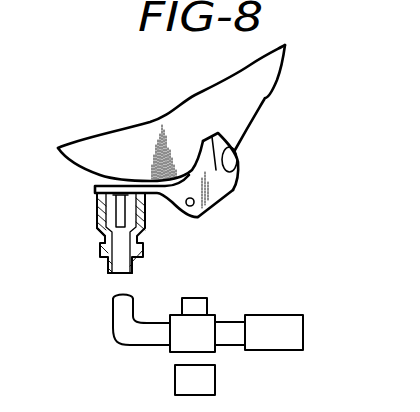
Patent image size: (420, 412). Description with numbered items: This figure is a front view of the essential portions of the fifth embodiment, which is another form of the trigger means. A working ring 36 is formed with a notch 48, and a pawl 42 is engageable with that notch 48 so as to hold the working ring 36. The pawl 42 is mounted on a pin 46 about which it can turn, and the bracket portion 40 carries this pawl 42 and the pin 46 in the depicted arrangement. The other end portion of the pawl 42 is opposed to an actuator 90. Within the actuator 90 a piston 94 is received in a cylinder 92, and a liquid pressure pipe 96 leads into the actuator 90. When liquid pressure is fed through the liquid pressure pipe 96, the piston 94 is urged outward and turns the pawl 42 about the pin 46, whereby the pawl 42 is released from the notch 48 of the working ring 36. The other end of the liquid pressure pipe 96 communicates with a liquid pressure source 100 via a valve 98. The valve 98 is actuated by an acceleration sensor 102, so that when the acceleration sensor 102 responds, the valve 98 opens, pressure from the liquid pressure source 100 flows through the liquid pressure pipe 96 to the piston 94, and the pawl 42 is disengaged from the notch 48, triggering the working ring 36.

The working ring 36 is at (265, 97).
The bracket 40 is at (262, 150).
The pawl 42 is at (222, 197).
The pin 46 is at (192, 206).
The notch 48 is at (237, 172).
The actuator 90 is at (93, 220).
The cylinder 92 is at (147, 212).
The piston 94 is at (95, 230).
The liquid pressure pipe 96 is at (136, 268).
The valve 98 is at (210, 318).
The liquid pressure source 100 is at (277, 317).
The acceleration sensor 102 is at (215, 377).